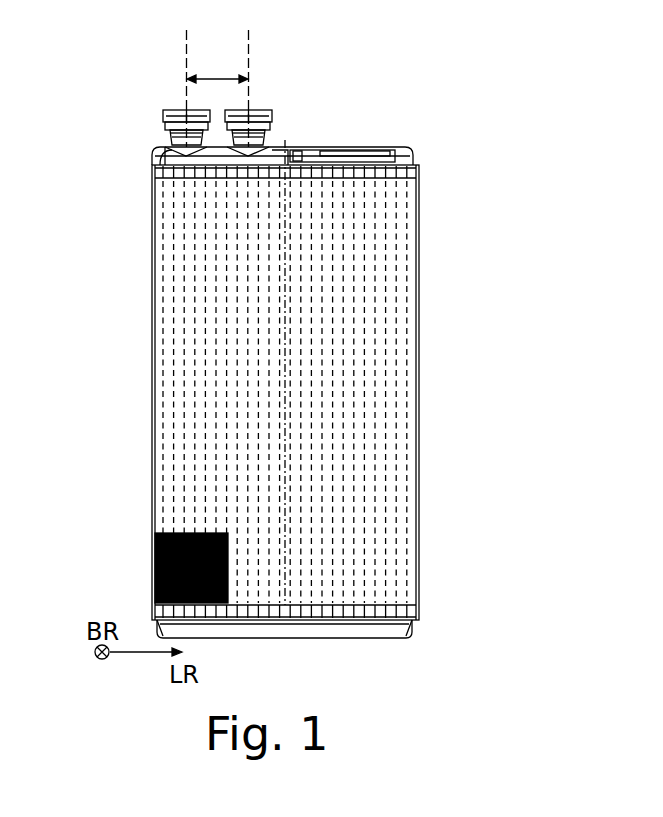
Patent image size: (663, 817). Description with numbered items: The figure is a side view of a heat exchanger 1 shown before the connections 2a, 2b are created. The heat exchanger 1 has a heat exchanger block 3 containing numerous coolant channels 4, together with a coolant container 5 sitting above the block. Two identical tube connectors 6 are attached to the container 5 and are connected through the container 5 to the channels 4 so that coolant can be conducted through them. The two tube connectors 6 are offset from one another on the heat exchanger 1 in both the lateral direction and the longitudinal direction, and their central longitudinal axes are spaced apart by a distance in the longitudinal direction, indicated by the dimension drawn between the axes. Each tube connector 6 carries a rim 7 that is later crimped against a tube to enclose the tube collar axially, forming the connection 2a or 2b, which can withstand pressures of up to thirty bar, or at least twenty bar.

The heat exchanger 1 is at (294, 319).
The connection 2a is at (155, 110).
The connection 2b is at (288, 110).
The heat exchanger block 3 is at (399, 327).
The coolant channels 4 is at (156, 574).
The coolant container 5 is at (391, 148).
The tube connectors 6 is at (165, 143).
The rims 7 is at (172, 104).